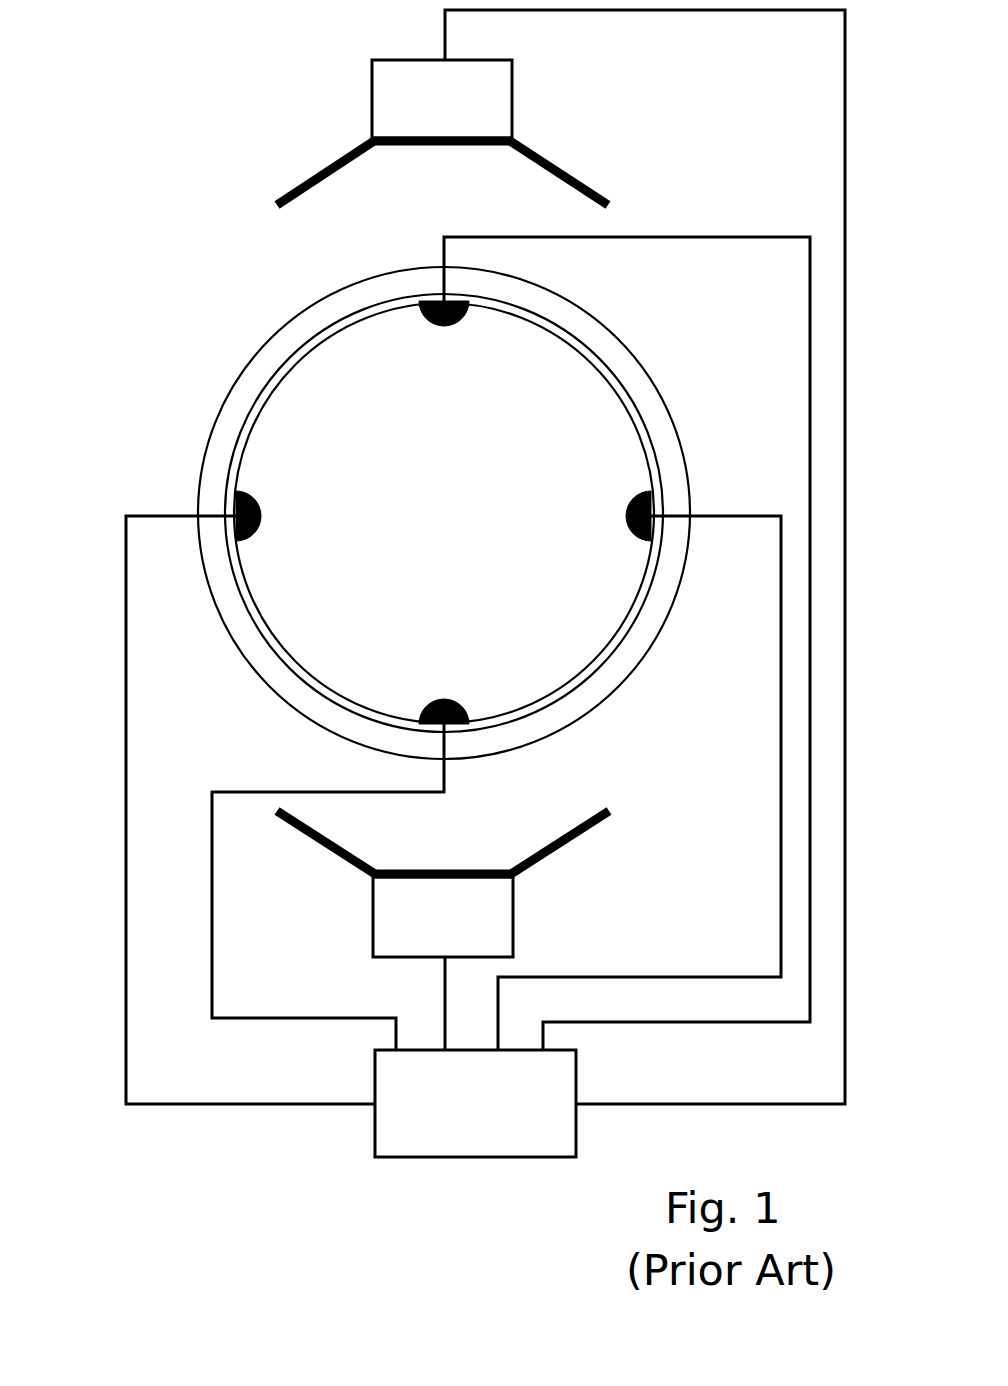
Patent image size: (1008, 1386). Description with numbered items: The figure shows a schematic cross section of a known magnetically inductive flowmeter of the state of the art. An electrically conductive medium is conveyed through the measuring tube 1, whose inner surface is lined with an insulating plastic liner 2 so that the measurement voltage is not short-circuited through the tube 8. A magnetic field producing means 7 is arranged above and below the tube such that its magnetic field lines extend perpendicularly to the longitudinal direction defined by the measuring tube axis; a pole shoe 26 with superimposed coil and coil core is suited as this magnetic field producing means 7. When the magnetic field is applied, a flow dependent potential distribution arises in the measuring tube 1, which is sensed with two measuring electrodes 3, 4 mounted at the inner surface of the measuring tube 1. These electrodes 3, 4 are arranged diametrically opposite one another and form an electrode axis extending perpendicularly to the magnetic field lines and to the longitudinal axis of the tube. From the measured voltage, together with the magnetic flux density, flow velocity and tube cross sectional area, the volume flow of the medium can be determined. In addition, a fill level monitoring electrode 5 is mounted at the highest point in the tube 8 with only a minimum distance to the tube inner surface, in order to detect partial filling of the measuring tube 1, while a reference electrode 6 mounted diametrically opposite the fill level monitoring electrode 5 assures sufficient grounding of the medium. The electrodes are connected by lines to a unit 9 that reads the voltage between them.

The measuring tube 1 is at (133, 168).
The plastic liner 2 is at (655, 470).
The measuring electrode 3 is at (262, 500).
The measuring electrode 4 is at (624, 526).
The fill level monitoring electrode 5 is at (457, 324).
The reference electrode 6 is at (456, 708).
The magnetic field producing means 7 is at (372, 60).
The tube 8 is at (655, 389).
The controller 9 is at (475, 1103).
The pole shoe 26 is at (330, 167).